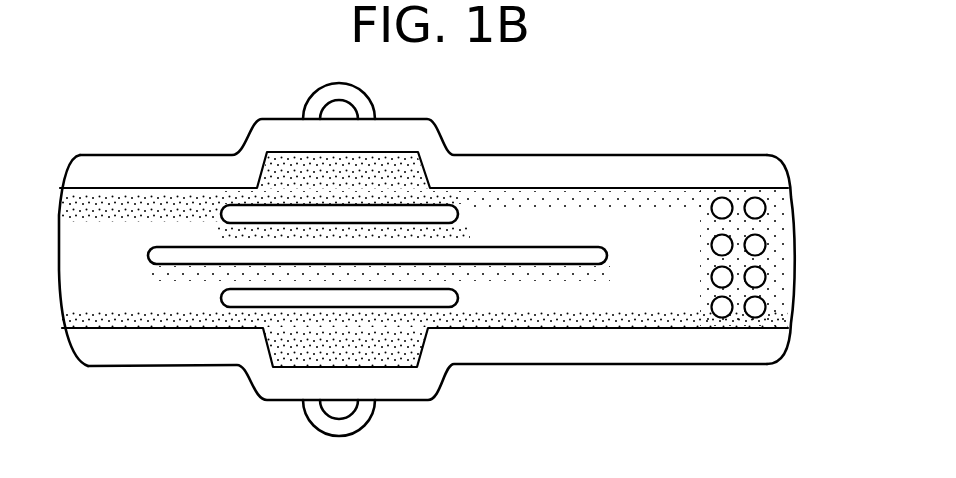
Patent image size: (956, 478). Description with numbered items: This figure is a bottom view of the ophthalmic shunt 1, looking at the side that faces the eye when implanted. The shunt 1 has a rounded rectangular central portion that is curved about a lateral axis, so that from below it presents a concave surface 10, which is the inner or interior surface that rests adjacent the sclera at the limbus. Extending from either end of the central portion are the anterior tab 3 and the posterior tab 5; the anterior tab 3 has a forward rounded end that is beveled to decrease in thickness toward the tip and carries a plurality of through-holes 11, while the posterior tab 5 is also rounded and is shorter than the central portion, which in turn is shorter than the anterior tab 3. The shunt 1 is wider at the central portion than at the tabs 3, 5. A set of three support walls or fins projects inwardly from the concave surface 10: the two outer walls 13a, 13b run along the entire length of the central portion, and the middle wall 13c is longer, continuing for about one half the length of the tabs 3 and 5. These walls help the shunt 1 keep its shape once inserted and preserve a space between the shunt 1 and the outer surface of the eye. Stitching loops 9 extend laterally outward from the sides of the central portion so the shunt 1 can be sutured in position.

The shunt 1 is at (545, 112).
The anterior tab 3 is at (717, 366).
The posterior tab 5 is at (93, 366).
The stitching loops 9 is at (375, 110).
The concave surface 10 is at (357, 348).
The through-holes 11 is at (768, 243).
The outer wall 13a is at (452, 305).
The outer wall 13b is at (447, 215).
The middle wall 13c is at (505, 265).